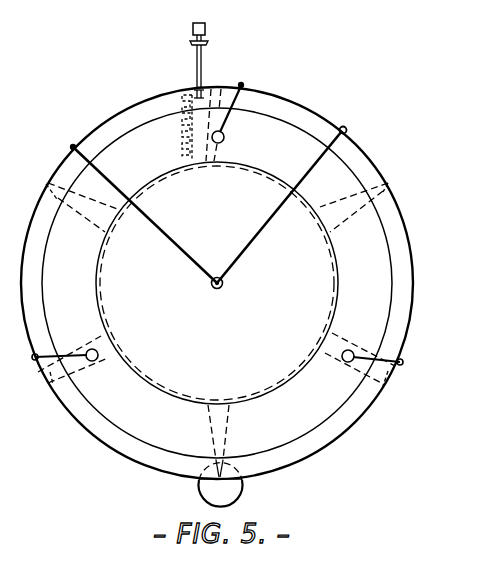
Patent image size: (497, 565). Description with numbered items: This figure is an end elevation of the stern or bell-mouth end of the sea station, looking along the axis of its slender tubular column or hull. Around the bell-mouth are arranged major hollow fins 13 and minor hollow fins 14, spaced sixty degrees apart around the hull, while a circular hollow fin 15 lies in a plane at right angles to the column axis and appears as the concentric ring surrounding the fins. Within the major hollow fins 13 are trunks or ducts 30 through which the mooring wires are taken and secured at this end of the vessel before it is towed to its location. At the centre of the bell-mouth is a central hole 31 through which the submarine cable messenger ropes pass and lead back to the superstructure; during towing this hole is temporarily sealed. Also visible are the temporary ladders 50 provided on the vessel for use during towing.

The major hollow fins 13 is at (226, 140).
The minor hollow fins 14 is at (364, 205).
The circular hollow fin 15 is at (402, 292).
The trunks or ducts 30 is at (345, 361).
The central hole 31 is at (214, 288).
The temporary ladders 50 is at (181, 123).